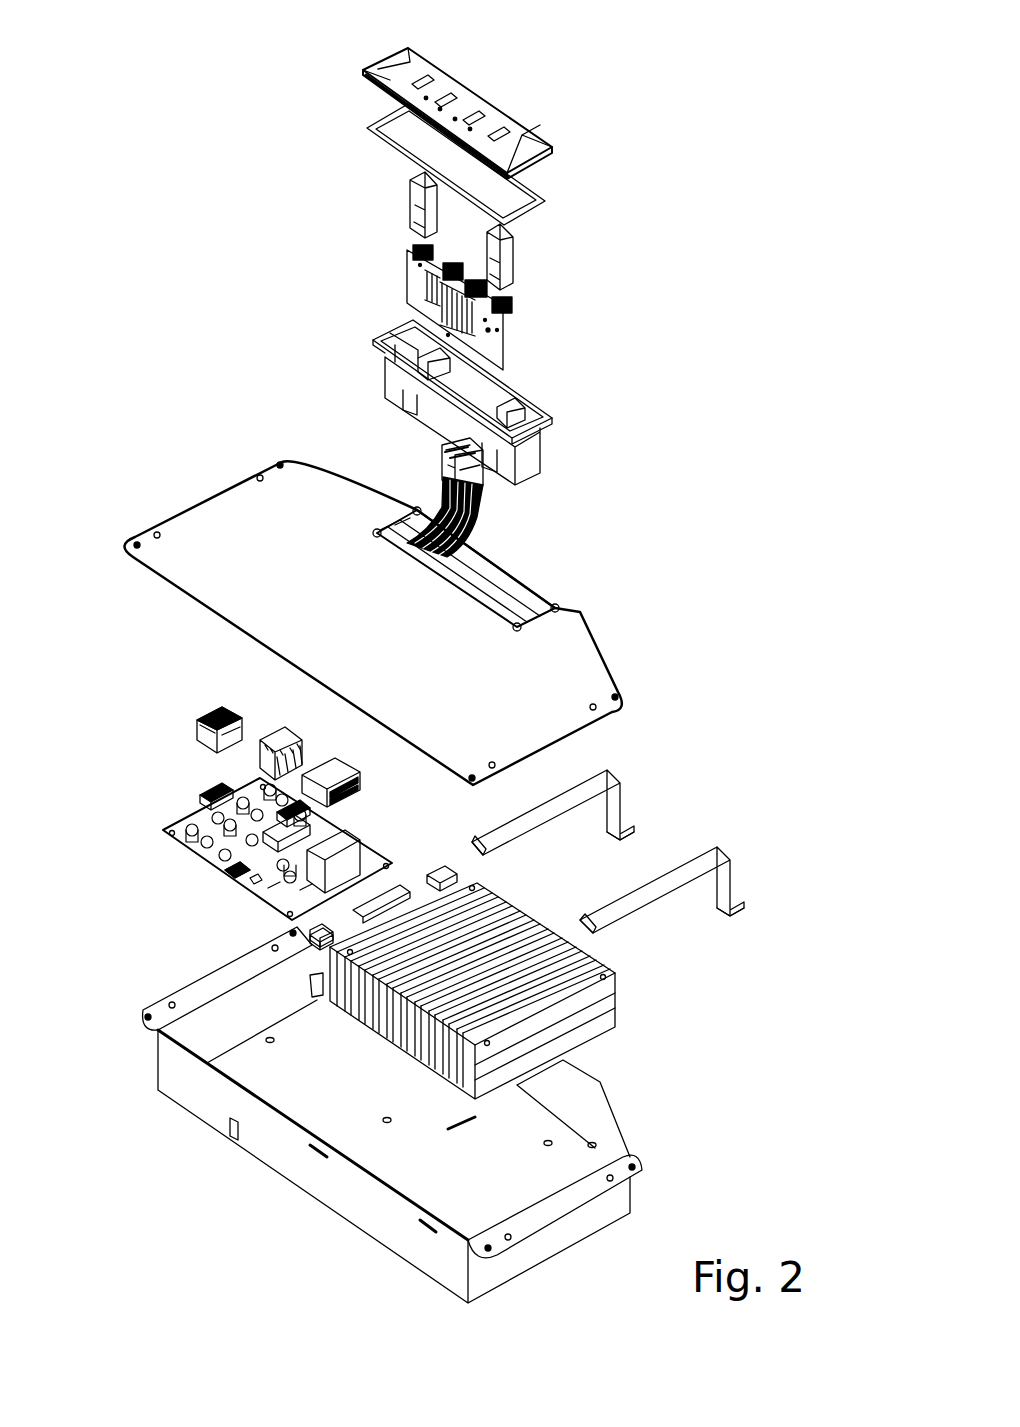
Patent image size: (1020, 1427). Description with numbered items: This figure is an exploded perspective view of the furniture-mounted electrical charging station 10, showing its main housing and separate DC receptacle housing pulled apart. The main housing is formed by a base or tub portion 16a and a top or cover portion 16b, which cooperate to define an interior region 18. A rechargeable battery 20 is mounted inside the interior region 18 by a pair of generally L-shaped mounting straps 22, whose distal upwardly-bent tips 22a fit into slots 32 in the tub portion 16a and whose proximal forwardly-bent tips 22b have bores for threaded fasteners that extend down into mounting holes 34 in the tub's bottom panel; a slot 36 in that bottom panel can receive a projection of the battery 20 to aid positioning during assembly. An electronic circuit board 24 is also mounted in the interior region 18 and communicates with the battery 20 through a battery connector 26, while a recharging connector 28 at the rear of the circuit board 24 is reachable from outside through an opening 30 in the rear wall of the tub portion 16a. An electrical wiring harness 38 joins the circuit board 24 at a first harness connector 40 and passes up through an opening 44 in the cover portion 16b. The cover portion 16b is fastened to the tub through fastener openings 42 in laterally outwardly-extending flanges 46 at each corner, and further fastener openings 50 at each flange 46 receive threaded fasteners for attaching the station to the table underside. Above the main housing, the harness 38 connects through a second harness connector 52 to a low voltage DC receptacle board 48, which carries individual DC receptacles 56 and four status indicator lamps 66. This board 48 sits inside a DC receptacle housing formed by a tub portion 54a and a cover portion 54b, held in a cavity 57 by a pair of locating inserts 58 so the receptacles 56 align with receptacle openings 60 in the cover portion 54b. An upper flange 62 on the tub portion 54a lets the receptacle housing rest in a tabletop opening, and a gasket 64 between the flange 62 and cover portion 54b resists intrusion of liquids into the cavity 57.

The furniture-mounted electrical charging station 10 is at (718, 130).
The tub portion 16a is at (343, 1113).
The cover portion 16b is at (180, 512).
The interior region 18 is at (228, 1010).
The rechargeable battery 20 is at (620, 1000).
The mounting straps 22 is at (641, 828).
The upwardly-bent tips 22a is at (476, 840).
The forwardly-bent tips 22b is at (626, 832).
The electronic circuit board 24 is at (252, 795).
The battery connector 26 is at (345, 765).
The recharging connector 28 is at (215, 875).
The opening 30 is at (226, 1130).
The slots 32 is at (316, 1153).
The mounting holes 34 is at (549, 1138).
The slot 36 is at (462, 1129).
The electrical wiring harness 38 is at (480, 522).
The first harness connector 40 is at (283, 730).
The fastener openings 42 is at (279, 461).
The opening 44 is at (528, 598).
The flanges 46 is at (213, 965).
The low voltage DC receptacle board 48 is at (455, 288).
The fastener openings 50 is at (264, 482).
The second harness connector 52 is at (440, 462).
The tub portion 54a is at (470, 391).
The cover portion 54b is at (530, 128).
The DC receptacles 56 is at (532, 300).
The cavity 57 is at (497, 400).
The locating inserts 58 is at (408, 195).
The receptacle openings 60 is at (448, 94).
The upper flange 62 is at (380, 338).
The gasket 64 is at (540, 200).
The status indicator lamps 66 is at (460, 300).